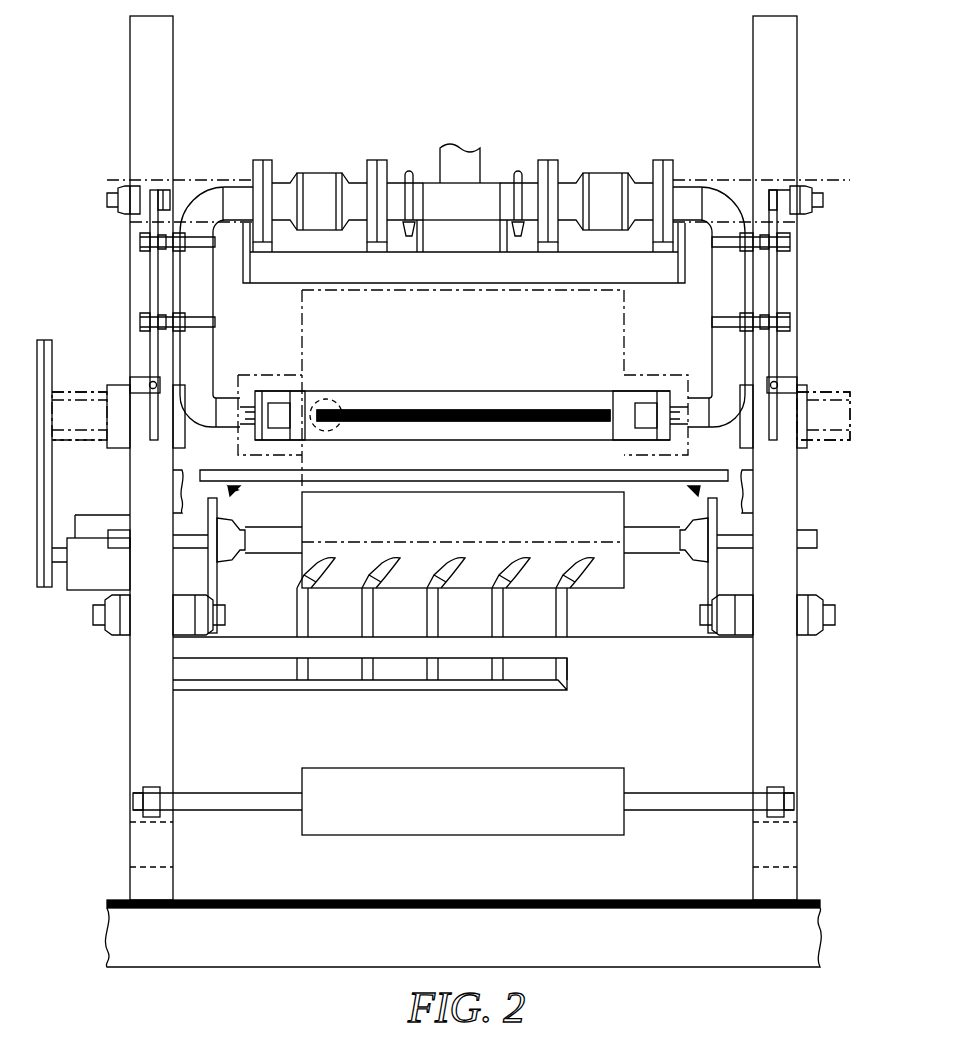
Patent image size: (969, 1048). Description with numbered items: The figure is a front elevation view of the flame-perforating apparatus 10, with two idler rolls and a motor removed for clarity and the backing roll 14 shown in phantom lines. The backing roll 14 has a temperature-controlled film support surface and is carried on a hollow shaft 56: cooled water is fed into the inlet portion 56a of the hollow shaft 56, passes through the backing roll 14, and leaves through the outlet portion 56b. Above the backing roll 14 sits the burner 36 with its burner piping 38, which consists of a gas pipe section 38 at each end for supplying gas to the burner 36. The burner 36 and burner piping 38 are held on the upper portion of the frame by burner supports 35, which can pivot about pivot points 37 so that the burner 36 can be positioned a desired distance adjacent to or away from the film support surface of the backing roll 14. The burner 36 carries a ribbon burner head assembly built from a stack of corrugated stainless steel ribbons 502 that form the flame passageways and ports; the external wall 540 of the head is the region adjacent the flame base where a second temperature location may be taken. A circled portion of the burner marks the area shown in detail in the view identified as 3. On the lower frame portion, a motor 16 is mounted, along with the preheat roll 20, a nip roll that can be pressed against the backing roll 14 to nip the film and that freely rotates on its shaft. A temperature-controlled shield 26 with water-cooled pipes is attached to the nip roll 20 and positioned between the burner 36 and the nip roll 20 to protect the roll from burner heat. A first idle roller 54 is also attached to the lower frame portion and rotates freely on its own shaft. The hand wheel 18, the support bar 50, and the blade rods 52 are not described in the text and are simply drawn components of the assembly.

The flame-perforating apparatus 10 is at (336, 60).
The backing roll 14 is at (623, 326).
The motor 16 is at (96, 586).
The hand wheel 18 is at (46, 586).
The preheat roll 20 is at (613, 580).
The temperature-controlled shield 26 is at (722, 482).
The burner supports 35 is at (152, 298).
The burner 36 is at (302, 390).
The pivot points 37 is at (166, 194).
The burner piping 38 is at (206, 296).
The support bar 50 is at (236, 690).
The blade rods 52 is at (364, 668).
The first idle roller 54 is at (454, 790).
The hollow shaft 56 is at (828, 426).
The inlet portion 56a is at (821, 385).
The outlet portion 56b is at (100, 432).
The corrugated stainless steel ribbons 502 is at (432, 405).
The external wall 540 is at (505, 405).
The detail view circle 3 is at (330, 397).